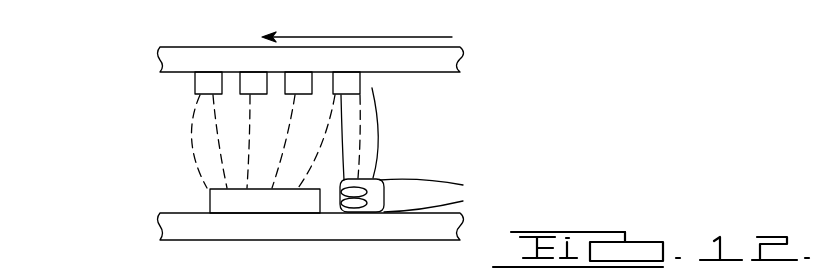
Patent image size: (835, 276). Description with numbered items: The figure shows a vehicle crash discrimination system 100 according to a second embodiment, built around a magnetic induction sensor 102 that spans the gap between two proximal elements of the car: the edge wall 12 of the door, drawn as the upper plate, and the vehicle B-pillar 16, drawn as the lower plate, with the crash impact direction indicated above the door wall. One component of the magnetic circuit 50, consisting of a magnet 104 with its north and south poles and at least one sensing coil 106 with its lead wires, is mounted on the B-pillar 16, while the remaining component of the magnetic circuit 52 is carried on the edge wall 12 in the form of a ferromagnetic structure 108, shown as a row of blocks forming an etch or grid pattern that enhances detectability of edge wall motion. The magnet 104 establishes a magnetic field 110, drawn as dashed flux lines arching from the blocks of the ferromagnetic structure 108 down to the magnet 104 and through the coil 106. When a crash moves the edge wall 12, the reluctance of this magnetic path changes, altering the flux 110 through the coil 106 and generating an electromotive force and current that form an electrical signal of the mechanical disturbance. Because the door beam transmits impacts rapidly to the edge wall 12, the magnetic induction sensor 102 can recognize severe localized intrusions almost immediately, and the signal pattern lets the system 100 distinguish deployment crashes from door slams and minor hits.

The edge wall of the door 12 is at (464, 60).
The vehicle B-pillar 16 is at (166, 228).
The component of the magnetic circuit 50 is at (167, 196).
The remaining component of the magnetic circuit 52 is at (129, 87).
The crash discrimination system 100 is at (336, 132).
The magnetic induction sensor 102 is at (467, 188).
The magnet 104 is at (210, 201).
The sensing coil 106 is at (385, 173).
The ferromagnetic structure 108 is at (380, 100).
The magnetic field 110 is at (179, 138).